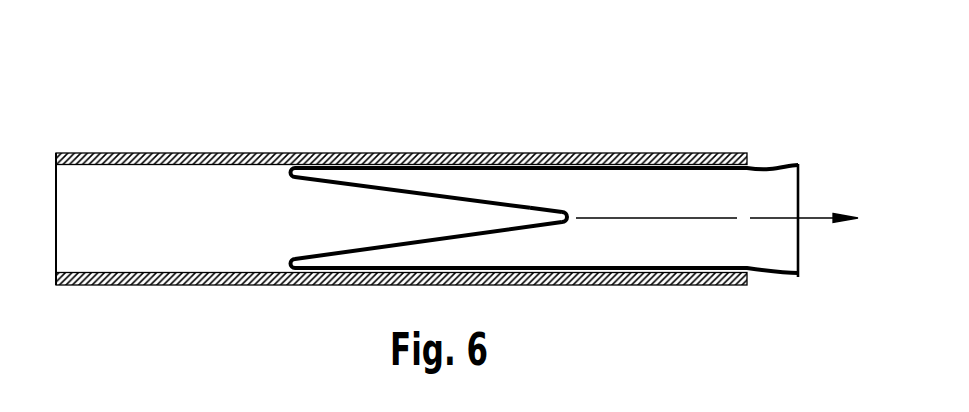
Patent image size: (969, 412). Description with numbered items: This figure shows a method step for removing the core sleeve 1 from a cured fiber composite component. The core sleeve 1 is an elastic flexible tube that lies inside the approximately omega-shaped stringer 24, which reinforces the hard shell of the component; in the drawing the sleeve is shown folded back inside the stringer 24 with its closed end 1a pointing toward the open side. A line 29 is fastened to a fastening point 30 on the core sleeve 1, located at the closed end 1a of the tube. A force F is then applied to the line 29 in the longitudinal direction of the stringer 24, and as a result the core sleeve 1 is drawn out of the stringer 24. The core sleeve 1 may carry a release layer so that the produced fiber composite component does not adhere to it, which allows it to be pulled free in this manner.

The stringer 24 is at (184, 153).
The core sleeve 1 is at (433, 196).
The closed end of the core sleeve 1a is at (548, 207).
The fastening point 30 is at (566, 209).
The line 29 is at (652, 218).
The force F is at (817, 218).